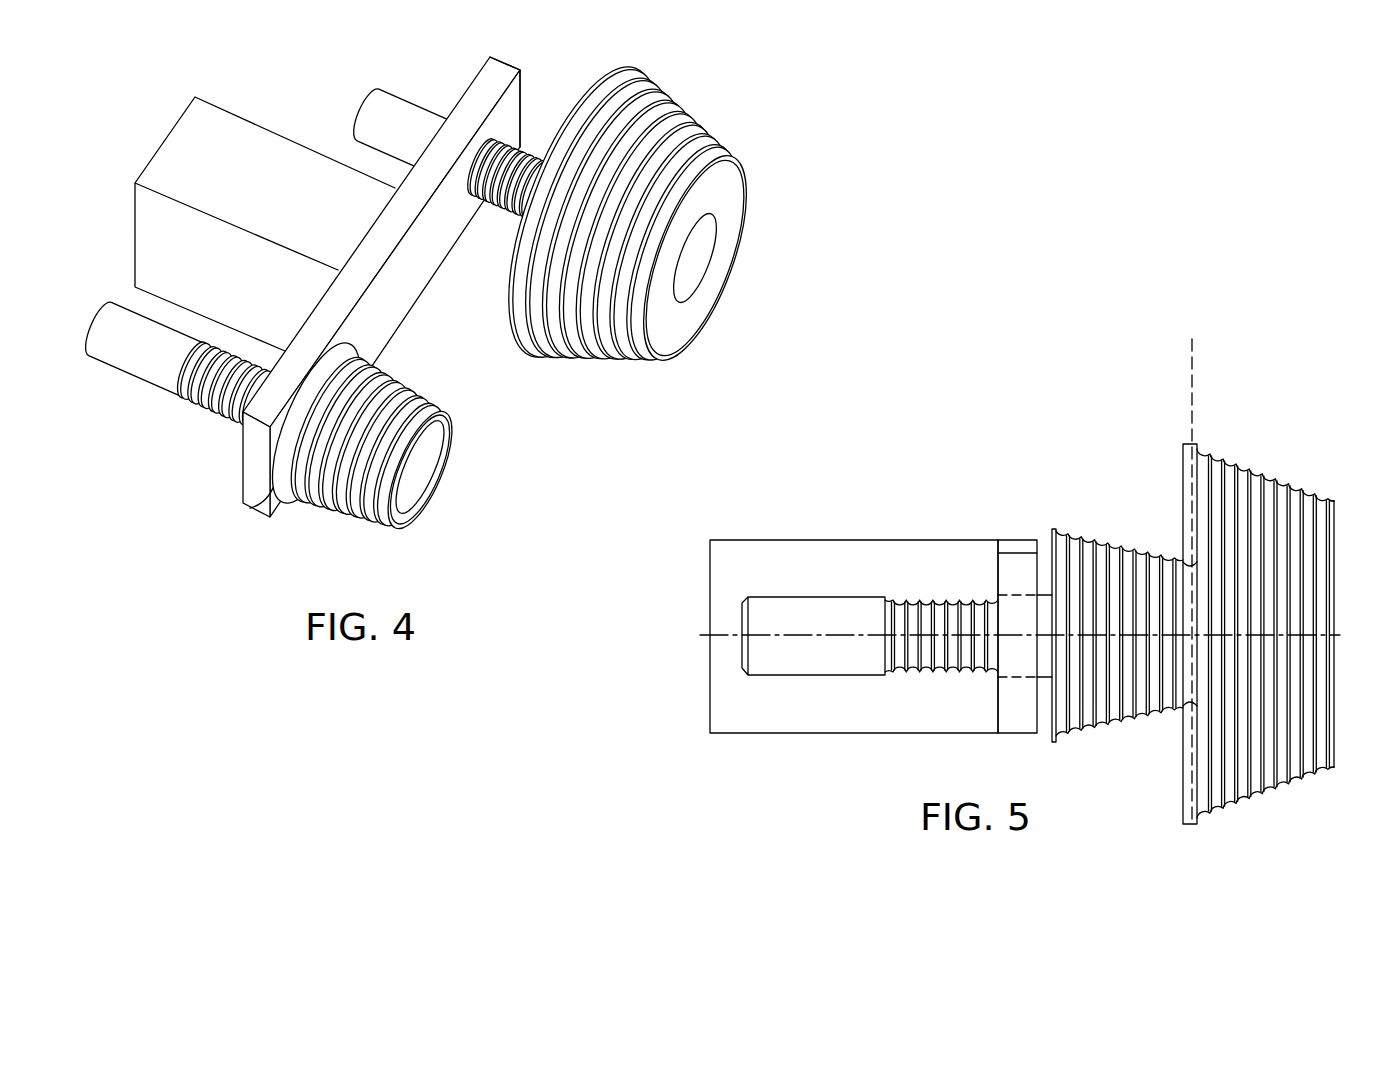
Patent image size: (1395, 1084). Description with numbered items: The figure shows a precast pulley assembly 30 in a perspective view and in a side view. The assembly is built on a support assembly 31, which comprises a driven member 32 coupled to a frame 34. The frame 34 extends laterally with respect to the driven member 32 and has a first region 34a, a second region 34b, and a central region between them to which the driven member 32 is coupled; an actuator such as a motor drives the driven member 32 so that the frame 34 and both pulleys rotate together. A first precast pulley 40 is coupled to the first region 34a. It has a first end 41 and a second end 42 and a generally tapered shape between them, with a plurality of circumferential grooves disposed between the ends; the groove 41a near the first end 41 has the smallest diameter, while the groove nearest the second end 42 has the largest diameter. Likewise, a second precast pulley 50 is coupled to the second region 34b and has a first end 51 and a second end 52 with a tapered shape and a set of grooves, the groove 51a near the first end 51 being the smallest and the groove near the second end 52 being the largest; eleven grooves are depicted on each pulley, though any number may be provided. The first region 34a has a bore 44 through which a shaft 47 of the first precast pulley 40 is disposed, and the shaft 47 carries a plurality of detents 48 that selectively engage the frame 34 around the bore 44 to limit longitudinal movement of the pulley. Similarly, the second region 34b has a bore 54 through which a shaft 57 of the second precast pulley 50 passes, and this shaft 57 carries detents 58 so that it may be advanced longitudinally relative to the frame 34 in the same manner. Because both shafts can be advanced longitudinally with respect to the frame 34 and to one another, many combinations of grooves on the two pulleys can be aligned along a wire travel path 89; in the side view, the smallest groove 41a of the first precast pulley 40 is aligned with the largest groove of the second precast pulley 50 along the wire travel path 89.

In FIG. 4, the precast pulley assembly 30 is at (296, 86).
In FIG. 4, the support assembly 31 is at (193, 148).
In FIG. 4, the driven member 32 is at (230, 138).
In FIG. 5, the driven member 32 is at (847, 560).
In FIG. 4, the frame 34 is at (370, 269).
In FIG. 5, the frame 34 is at (995, 611).
In FIG. 4, the first region 34a is at (243, 442).
In FIG. 4, the second region 34b is at (481, 70).
In FIG. 4, the first precast pulley 40 is at (356, 458).
In FIG. 5, the first precast pulley 40 is at (1109, 631).
In FIG. 4, the first end 41 is at (403, 517).
In FIG. 4, the groove 41a is at (385, 518).
In FIG. 5, the groove 41a is at (1190, 714).
In FIG. 4, the second end 42 is at (253, 503).
In FIG. 5, the second end 42 is at (1052, 738).
In FIG. 5, the bore 44 is at (1000, 613).
In FIG. 4, the shaft 47 is at (120, 350).
In FIG. 5, the shaft 47 is at (803, 657).
In FIG. 4, the detents 48 is at (208, 410).
In FIG. 5, the detents 48 is at (953, 673).
In FIG. 4, the second precast pulley 50 is at (642, 199).
In FIG. 5, the second precast pulley 50 is at (1247, 589).
In FIG. 4, the first end 51 is at (730, 192).
In FIG. 5, the first end 51 is at (1334, 518).
In FIG. 4, the groove 51a is at (727, 153).
In FIG. 5, the groove 51a is at (1321, 771).
In FIG. 4, the second end 52 is at (597, 97).
In FIG. 5, the second end 52 is at (1184, 466).
In FIG. 4, the bore 54 is at (493, 125).
In FIG. 4, the shaft 57 is at (372, 118).
In FIG. 4, the detents 58 is at (538, 157).
In FIG. 5, the wire travel path 89 is at (1188, 375).